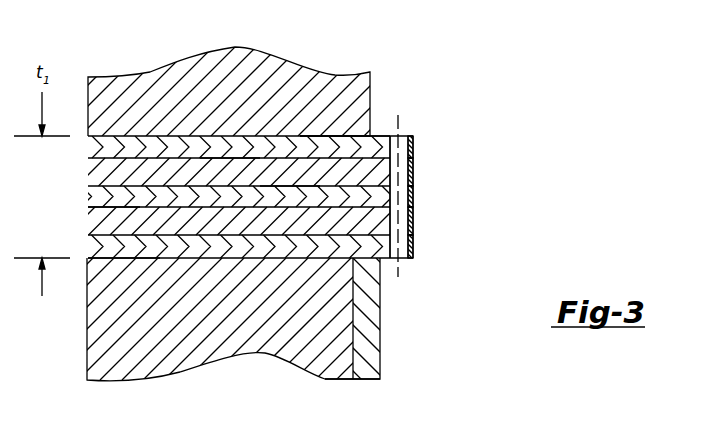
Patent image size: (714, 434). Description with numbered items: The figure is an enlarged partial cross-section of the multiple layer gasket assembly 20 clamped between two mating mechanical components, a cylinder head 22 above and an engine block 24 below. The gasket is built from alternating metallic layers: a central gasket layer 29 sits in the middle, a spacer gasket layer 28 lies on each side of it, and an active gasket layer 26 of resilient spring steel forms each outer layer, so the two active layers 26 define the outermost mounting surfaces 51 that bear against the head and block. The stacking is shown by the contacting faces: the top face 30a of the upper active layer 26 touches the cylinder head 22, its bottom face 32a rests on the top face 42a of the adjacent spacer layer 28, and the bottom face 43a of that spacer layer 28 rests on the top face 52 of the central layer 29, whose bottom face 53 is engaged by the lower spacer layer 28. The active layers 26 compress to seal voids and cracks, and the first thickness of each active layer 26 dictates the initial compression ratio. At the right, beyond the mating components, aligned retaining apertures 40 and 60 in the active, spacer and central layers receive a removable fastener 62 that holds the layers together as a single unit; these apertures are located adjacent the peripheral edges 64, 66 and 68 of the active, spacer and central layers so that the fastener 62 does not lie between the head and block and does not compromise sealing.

The gasket assembly 20 is at (492, 190).
The mating mechanical component (cylinder head) 22 is at (230, 50).
The mating mechanical component (engine block) 24 is at (203, 360).
The active gasket layer 26 is at (195, 242).
The spacer gasket layer 28 is at (360, 175).
The central gasket layer 29 is at (163, 217).
The top face of active layer 30a is at (340, 135).
The bottom face of active layer 32a is at (268, 167).
The retaining aperture of active layer 40 is at (402, 117).
The retaining aperture of central layer 60 is at (411, 197).
The top face of spacer layer 42a is at (223, 156).
The bottom face of spacer layer 43a is at (137, 188).
The outermost mounting surface 51 is at (383, 135).
The top face of central layer 52 is at (280, 179).
The bottom face of central layer 53 is at (111, 212).
The removable fastener 62 is at (386, 433).
The peripheral edge of active layer 64 is at (415, 138).
The peripheral edge of spacer layer 66 is at (415, 170).
The peripheral edge of central layer 68 is at (415, 205).